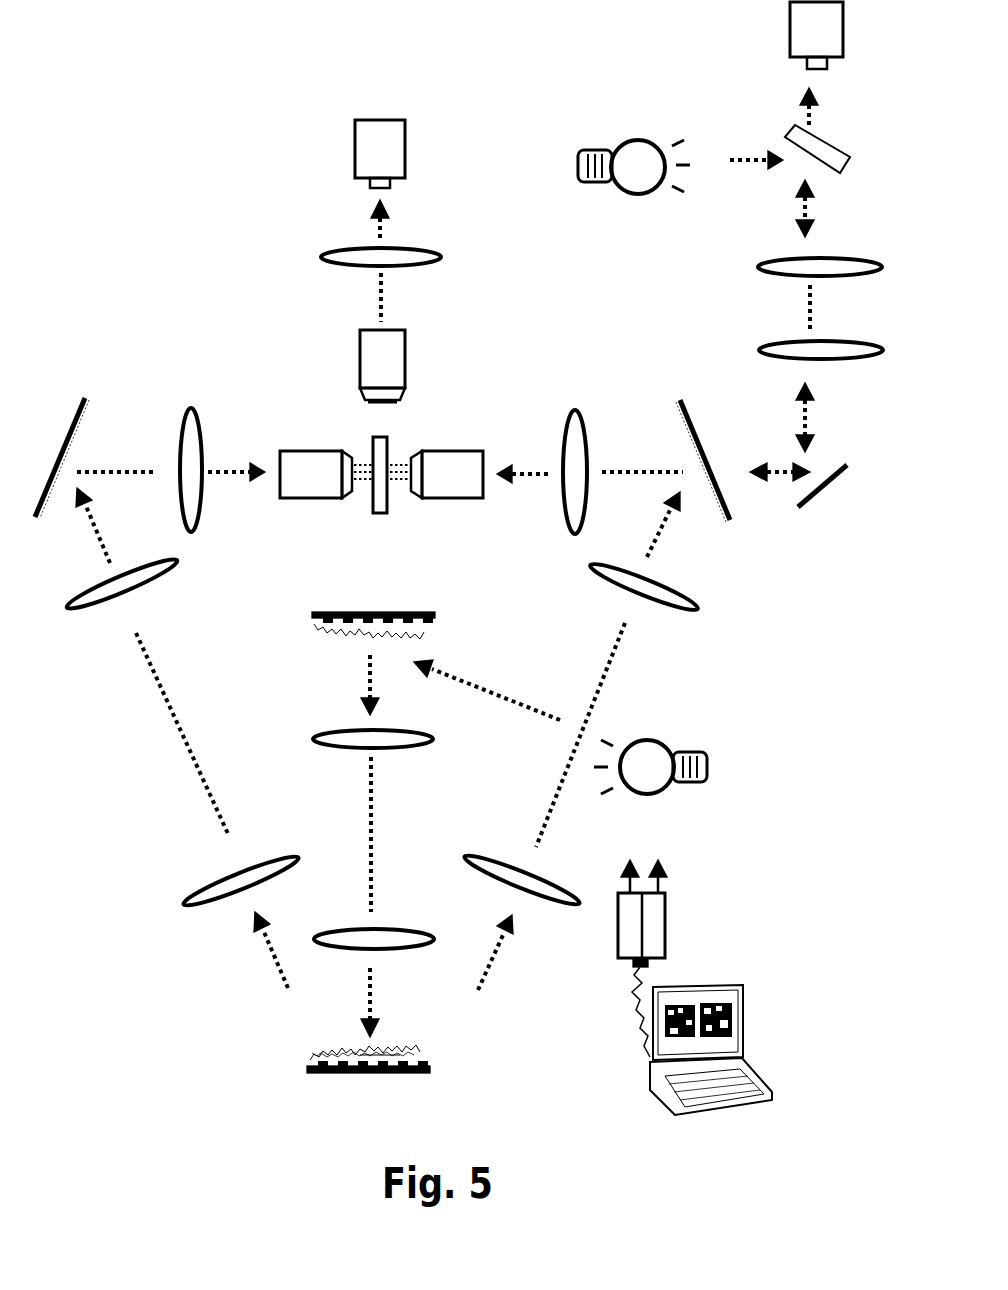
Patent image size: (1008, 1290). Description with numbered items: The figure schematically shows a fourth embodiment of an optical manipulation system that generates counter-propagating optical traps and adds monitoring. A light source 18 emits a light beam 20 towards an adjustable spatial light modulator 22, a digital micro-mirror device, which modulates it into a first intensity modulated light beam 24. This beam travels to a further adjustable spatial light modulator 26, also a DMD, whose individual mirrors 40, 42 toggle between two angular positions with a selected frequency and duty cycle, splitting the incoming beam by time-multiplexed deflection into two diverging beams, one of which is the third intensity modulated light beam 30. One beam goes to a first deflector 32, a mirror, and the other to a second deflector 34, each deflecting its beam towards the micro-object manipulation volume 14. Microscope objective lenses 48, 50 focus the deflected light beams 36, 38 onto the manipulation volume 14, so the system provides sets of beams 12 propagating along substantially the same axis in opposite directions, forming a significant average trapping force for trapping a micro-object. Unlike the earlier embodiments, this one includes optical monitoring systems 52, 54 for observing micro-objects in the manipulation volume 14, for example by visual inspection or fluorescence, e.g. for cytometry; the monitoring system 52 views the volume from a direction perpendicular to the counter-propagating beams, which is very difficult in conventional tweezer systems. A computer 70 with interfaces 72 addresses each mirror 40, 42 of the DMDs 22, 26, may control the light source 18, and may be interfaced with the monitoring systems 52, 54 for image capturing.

The sets of beams 12 is at (365, 467).
The micro-object manipulation volume 14 is at (382, 483).
The light source 18 is at (655, 778).
The light beam 20 is at (495, 682).
The adjustable spatial light modulator 22 is at (412, 612).
The first intensity modulated light beam 24 is at (375, 816).
The further adjustable spatial light modulator 26 is at (307, 1072).
The third intensity modulated light beam 30 is at (492, 958).
The first deflector 32 is at (70, 433).
The second deflector 34 is at (677, 417).
The deflected light beam 36 is at (222, 467).
The deflected light beam 38 is at (530, 477).
The mirror 40 is at (403, 1053).
The mirror 42 is at (375, 1058).
The microscope objective lens 48 is at (303, 452).
The microscope objective lens 50 is at (442, 460).
The optical monitoring system 52 is at (305, 243).
The optical monitoring system 54 is at (725, 233).
The computer 70 is at (648, 1090).
The interfaces 72 is at (659, 910).